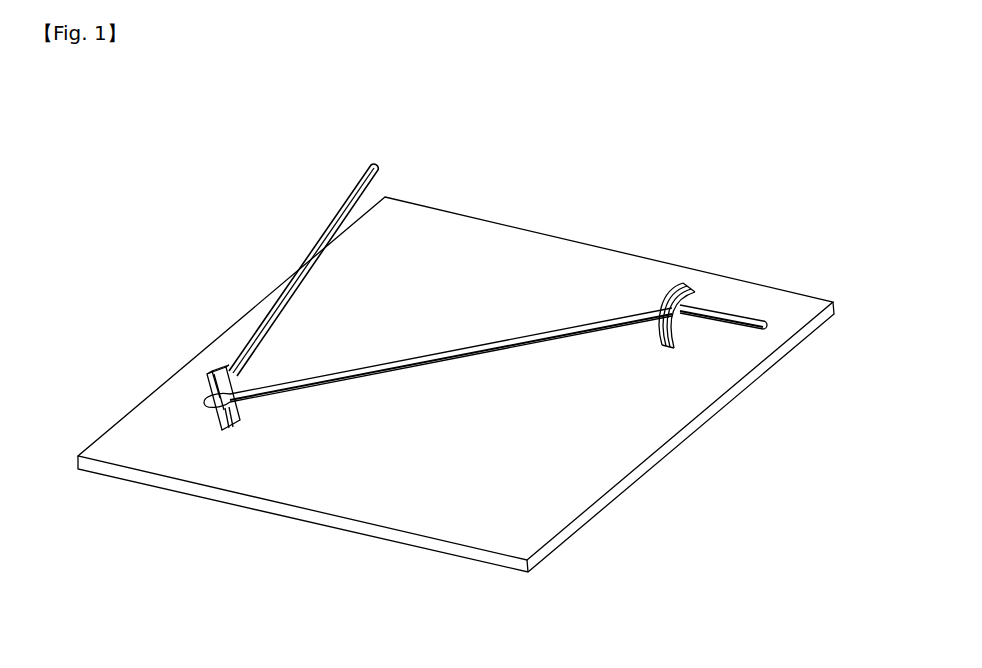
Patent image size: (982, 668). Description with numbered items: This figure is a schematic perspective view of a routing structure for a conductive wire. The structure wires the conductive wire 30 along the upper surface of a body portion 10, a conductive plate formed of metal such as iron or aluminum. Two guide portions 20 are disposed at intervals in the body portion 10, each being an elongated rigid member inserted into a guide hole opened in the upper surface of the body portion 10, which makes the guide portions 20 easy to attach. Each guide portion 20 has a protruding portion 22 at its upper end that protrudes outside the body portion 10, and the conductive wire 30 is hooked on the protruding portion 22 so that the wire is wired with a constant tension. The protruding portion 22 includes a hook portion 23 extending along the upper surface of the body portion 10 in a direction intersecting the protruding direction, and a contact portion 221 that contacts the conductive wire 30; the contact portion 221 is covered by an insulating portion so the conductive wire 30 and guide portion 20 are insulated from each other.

The body portion 10 is at (489, 244).
The guide portion 20 is at (250, 426).
The protruding portion 22 is at (226, 388).
The hook portion 23 is at (208, 392).
The contact portion 221 is at (218, 424).
The conductive wire 30 is at (345, 186).